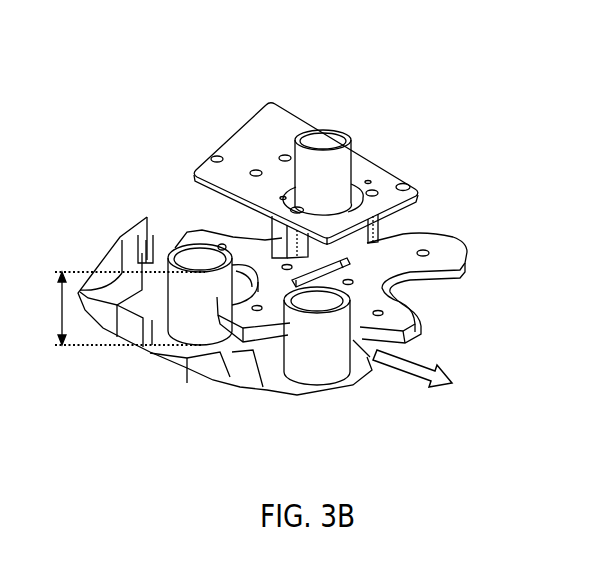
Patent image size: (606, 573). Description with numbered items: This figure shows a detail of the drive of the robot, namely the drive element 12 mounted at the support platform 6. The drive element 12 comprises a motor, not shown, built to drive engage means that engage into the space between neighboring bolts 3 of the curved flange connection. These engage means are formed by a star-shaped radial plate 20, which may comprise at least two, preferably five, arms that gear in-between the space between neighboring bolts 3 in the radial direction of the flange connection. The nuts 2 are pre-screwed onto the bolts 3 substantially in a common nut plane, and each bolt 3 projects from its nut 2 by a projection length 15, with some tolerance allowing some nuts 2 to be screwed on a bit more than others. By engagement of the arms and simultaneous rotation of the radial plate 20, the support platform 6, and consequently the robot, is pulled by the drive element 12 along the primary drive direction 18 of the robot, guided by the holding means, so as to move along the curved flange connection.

The drive element 12 is at (405, 51).
The support platform 6 is at (243, 144).
The star-shaped radial plate 20 is at (440, 257).
The bolt 3 is at (315, 355).
The nut 2 is at (208, 368).
The primary drive direction 18 is at (413, 368).
The projection length 15 is at (120, 308).